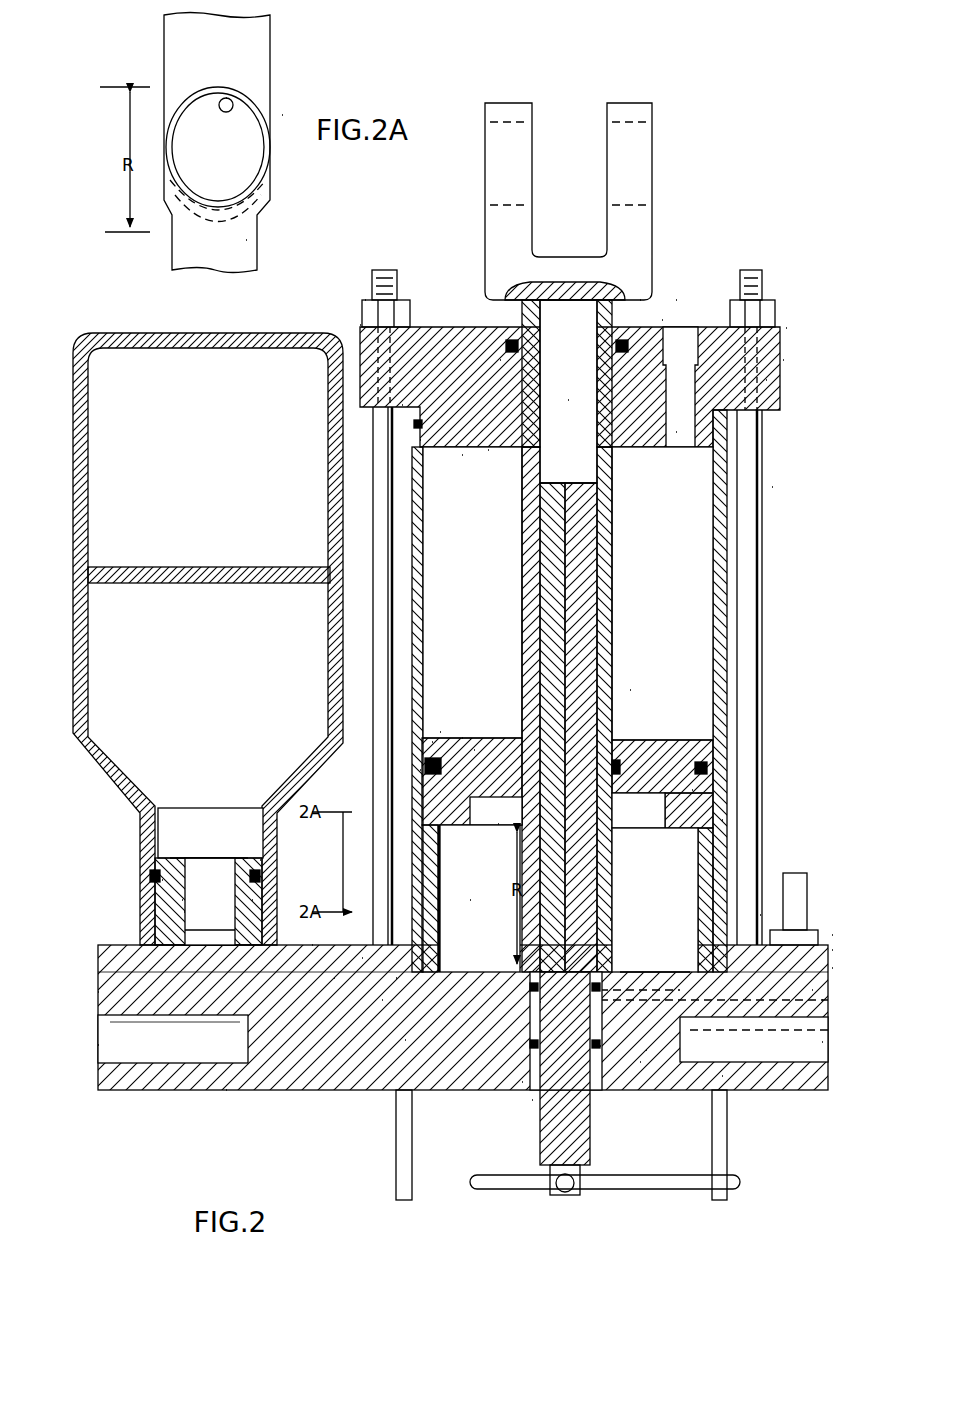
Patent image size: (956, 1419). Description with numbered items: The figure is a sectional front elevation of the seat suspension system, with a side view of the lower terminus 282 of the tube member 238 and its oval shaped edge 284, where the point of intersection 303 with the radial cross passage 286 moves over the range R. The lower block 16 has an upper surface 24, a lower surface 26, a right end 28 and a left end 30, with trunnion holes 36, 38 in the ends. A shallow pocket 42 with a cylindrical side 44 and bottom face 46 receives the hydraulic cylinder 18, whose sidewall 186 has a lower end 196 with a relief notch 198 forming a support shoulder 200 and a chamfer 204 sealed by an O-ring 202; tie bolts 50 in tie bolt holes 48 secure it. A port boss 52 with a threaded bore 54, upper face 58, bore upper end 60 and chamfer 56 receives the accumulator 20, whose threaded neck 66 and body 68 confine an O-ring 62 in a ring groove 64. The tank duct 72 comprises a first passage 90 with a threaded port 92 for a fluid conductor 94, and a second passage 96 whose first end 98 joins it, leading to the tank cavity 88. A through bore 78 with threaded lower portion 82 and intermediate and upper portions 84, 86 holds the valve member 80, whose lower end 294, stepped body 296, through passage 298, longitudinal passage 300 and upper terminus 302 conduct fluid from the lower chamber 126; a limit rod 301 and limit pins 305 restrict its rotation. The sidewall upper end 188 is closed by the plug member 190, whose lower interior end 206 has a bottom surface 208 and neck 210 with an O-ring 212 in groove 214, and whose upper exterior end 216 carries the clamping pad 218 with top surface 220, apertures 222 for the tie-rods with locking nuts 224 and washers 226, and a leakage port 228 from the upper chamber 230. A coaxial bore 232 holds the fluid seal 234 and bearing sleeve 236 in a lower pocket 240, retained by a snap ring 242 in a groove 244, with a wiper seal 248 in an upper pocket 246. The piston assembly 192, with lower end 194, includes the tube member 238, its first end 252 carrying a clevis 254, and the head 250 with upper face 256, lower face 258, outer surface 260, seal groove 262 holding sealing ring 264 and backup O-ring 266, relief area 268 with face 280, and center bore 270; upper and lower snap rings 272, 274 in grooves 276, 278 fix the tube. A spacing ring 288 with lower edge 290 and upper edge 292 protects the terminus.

In FIG. 2, the lower block 16 is at (96, 957).
In FIG. 2, the hydraulic cylinder 18 is at (772, 487).
In FIG. 2, the fluid receiving accumulator 20 is at (205, 332).
In FIG. 2, the upper surface 24 is at (312, 945).
In FIG. 2, the lower surface 26 is at (226, 1090).
In FIG. 2, the right end 28 is at (832, 968).
In FIG. 2, the left end 30 is at (98, 992).
In FIG. 2, the trunnion hole 36 is at (98, 1045).
In FIG. 2, the trunnion hole 38 is at (822, 1040).
In FIG. 2, the shallow pocket 42 is at (405, 1030).
In FIG. 2, the pocket side 44 is at (396, 978).
In FIG. 2, the pocket bottom face 46 is at (466, 970).
In FIG. 2, the tie bolt holes 48 is at (872, 938).
In FIG. 2, the tie bolts 50 is at (386, 268).
In FIG. 2, the port boss 52 is at (142, 912).
In FIG. 2, the threaded bore 54 is at (252, 900).
In FIG. 2, the chamfer 56 is at (148, 893).
In FIG. 2, the upper face 58 is at (150, 875).
In FIG. 2, the upper end of bore 60 is at (182, 900).
In FIG. 2, the O-ring 62 is at (260, 860).
In FIG. 2, the ring groove 64 is at (162, 880).
In FIG. 2, the accumulator threaded neck 66 is at (184, 912).
In FIG. 2, the accumulator body 68 is at (118, 786).
In FIG. 2, the tank duct 72 is at (646, 1050).
In FIG. 2, the through bore 78 is at (522, 1082).
In FIG. 2A, the valve member 80 is at (246, 240).
In FIG. 2, the valve member 80 is at (530, 1110).
In FIG. 2, the threaded lower portion 82 is at (600, 1046).
In FIG. 2, the intermediate bore portion 84 is at (540, 1046).
In FIG. 2, the upper bore portion 86 is at (522, 985).
In FIG. 2, the tank cavity 88 is at (540, 1002).
In FIG. 2, the first passage 90 is at (812, 990).
In FIG. 2, the threaded port 92 is at (832, 935).
In FIG. 2, the fluid conductor 94 is at (792, 905).
In FIG. 2, the second horizontal passage 96 is at (722, 1076).
In FIG. 2, the first end of second passage 98 is at (822, 1042).
In FIG. 2, the cylinder lower chamber 126 is at (634, 893).
In FIG. 2, the cylinder sidewall 186 is at (727, 550).
In FIG. 2, the sidewall upper end 188 is at (402, 405).
In FIG. 2, the plug member 190 is at (783, 360).
In FIG. 2, the piston assembly 192 is at (630, 690).
In FIG. 2, the piston assembly lower end 194 is at (610, 920).
In FIG. 2, the sidewall lower end 196 is at (362, 958).
In FIG. 2, the relief notch 198 is at (334, 978).
In FIG. 2, the support shoulder 200 is at (760, 915).
In FIG. 2, the O-ring 202 is at (822, 1000).
In FIG. 2, the chamfer 204 is at (382, 1000).
In FIG. 2, the plug lower interior end 206 is at (462, 455).
In FIG. 2, the plug bottom surface 208 is at (662, 593).
In FIG. 2, the neck portion 210 is at (420, 418).
In FIG. 2, the O-ring 212 is at (416, 428).
In FIG. 2, the circumferential groove 214 is at (420, 440).
In FIG. 2, the plug upper exterior end 216 is at (676, 300).
In FIG. 2, the clamping pad 218 is at (786, 328).
In FIG. 2, the top surface 220 is at (434, 326).
In FIG. 2, the vertical aperture 222 is at (766, 380).
In FIG. 2, the locking nut 224 is at (365, 300).
In FIG. 2, the washer 226 is at (360, 325).
In FIG. 2, the leakage port 228 is at (682, 330).
In FIG. 2, the cylinder upper chamber 230 is at (452, 608).
In FIG. 2, the coaxial bore 232 is at (500, 360).
In FIG. 2, the fluid seal 234 is at (510, 350).
In FIG. 2, the bearing sleeve 236 is at (568, 389).
In FIG. 2A, the tube member 238 is at (268, 33).
In FIG. 2, the tube member 238 is at (522, 532).
In FIG. 2, the lower pocket 240 is at (567, 391).
In FIG. 2, the snap ring 242 is at (488, 450).
In FIG. 2, the circumferential groove 244 is at (676, 432).
In FIG. 2, the upper pocket 246 is at (640, 300).
In FIG. 2, the wiper seal 248 is at (662, 320).
In FIG. 2, the head 250 is at (440, 732).
In FIG. 2, the tube member first end 252 is at (524, 290).
In FIG. 2, the clevis 254 is at (656, 118).
In FIG. 2, the head upper face 256 is at (462, 738).
In FIG. 2, the head lower face 258 is at (452, 898).
In FIG. 2, the head outer surface 260 is at (420, 770).
In FIG. 2, the seal groove 262 is at (472, 752).
In FIG. 2, the sealing ring 264 is at (428, 768).
In FIG. 2, the backup O-ring 266 is at (432, 742).
In FIG. 2, the clearance relief area 268 is at (470, 900).
In FIG. 2, the center bore 270 is at (632, 745).
In FIG. 2, the upper snap ring 272 is at (618, 740).
In FIG. 2, the lower snap ring 274 is at (638, 823).
In FIG. 2, the snap ring groove 276 is at (474, 750).
In FIG. 2, the snap ring groove 278 is at (498, 824).
In FIG. 2, the relief area face 280 is at (692, 790).
In FIG. 2A, the lower terminus 282 is at (282, 115).
In FIG. 2, the lower terminus 282 is at (462, 900).
In FIG. 2A, the oval shaped edge 284 is at (270, 165).
In FIG. 2A, the radial cross passage 286 is at (230, 108).
In FIG. 2, the radial cross passage 286 is at (706, 768).
In FIG. 2, the spacing ring 288 is at (706, 845).
In FIG. 2, the ring lower edge 290 is at (655, 958).
In FIG. 2, the ring upper edge 292 is at (722, 820).
In FIG. 2, the valve member lower end 294 is at (532, 1100).
In FIG. 2, the stepped upper body portion 296 is at (640, 1062).
In FIG. 2, the diametrical through passage 298 is at (592, 1010).
In FIG. 2, the longitudinal passage 300 is at (570, 570).
In FIG. 2, the limit rod 301 is at (522, 1192).
In FIG. 2, the upper terminus 302 is at (568, 455).
In FIG. 2A, the point of intersection 303 is at (226, 98).
In FIG. 2, the limit pins 305 is at (406, 1200).